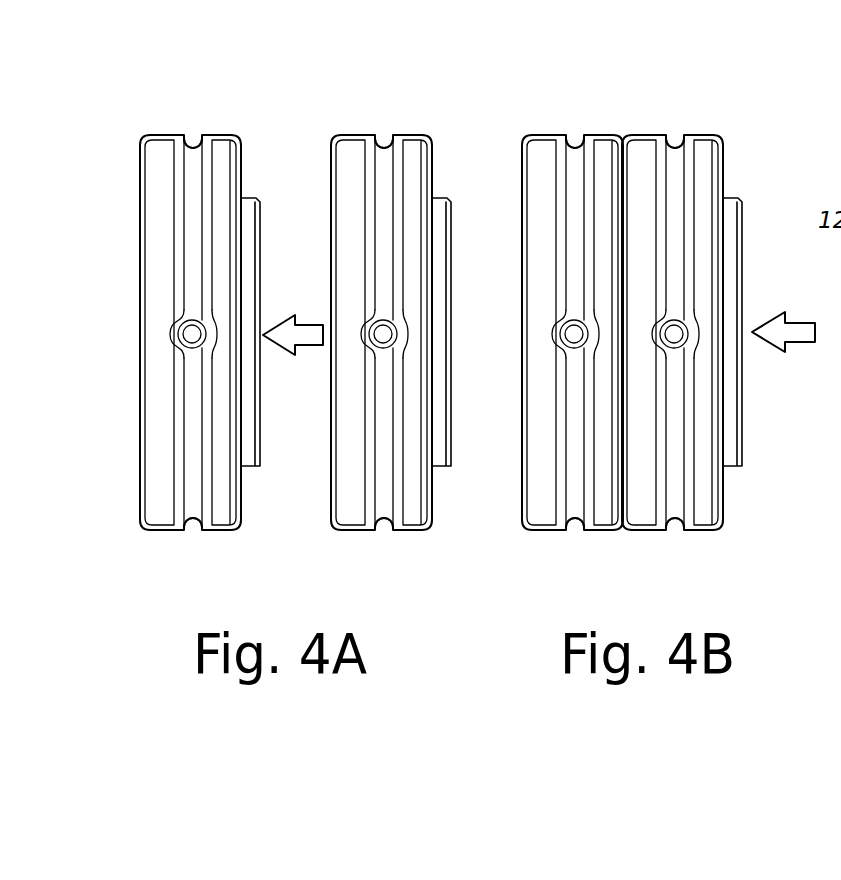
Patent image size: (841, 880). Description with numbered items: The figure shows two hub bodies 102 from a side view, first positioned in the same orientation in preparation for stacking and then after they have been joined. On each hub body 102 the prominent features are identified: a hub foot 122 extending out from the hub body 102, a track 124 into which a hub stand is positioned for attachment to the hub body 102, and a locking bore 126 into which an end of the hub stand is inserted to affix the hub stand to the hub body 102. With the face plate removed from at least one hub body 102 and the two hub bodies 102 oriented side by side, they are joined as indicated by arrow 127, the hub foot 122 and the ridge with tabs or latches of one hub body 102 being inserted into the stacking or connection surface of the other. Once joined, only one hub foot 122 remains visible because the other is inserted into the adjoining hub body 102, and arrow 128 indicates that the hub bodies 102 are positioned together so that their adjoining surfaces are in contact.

In FIG. 4A, the hub body 102 is at (163, 192).
In FIG. 4B, the hub body 102 is at (543, 143).
In FIG. 4A, the hub foot 122 is at (247, 203).
In FIG. 4B, the hub foot 122 is at (729, 202).
In FIG. 4A, the track 124 is at (196, 118).
In FIG. 4B, the track 124 is at (577, 118).
In FIG. 4A, the locking bore 126 is at (192, 335).
In FIG. 4B, the locking bore 126 is at (574, 333).
In FIG. 4A, the arrow 127 is at (286, 341).
In FIG. 4B, the arrow 128 is at (798, 330).